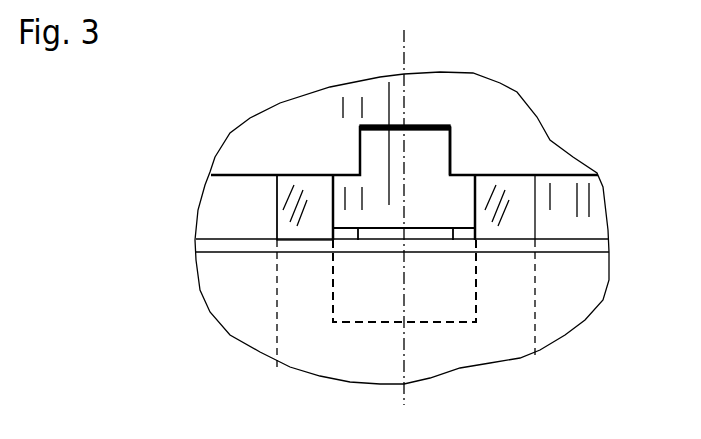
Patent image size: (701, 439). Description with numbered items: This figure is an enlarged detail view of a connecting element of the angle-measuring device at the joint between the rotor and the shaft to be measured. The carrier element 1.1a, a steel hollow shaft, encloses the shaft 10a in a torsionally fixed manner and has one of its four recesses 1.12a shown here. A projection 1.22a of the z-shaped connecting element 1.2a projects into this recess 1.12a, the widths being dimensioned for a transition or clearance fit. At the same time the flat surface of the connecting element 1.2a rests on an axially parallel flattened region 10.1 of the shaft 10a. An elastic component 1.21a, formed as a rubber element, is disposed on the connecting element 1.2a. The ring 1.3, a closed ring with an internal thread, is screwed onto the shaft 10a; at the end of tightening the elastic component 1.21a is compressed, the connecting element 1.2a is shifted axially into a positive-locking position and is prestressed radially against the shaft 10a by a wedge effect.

The shaft 10a is at (212, 178).
The carrier element 1.1a is at (545, 137).
The flattened region 10.1 is at (309, 188).
The recess 1.12a is at (450, 125).
The projection 1.22a is at (443, 158).
The elastic component 1.21a is at (424, 229).
The connecting element 1.2a is at (373, 146).
The ring 1.3 is at (212, 291).